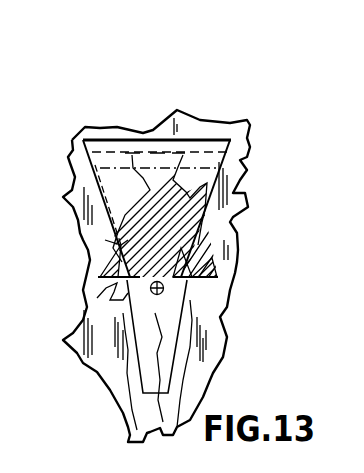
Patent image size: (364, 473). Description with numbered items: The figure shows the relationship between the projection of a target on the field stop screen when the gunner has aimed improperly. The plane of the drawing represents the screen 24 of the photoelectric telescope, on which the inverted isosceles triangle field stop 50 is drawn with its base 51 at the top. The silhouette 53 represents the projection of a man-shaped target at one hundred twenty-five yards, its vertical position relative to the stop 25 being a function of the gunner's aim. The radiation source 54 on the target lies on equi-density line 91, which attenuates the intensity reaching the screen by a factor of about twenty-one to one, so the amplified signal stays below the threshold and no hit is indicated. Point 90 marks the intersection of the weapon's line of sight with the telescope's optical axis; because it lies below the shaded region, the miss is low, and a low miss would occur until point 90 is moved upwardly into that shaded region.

The screen 24 is at (207, 124).
The stop 25 is at (231, 142).
The base 51 is at (110, 172).
The source 54 is at (158, 152).
The equi-density line 91 is at (97, 160).
The field stop 50 is at (120, 243).
The silhouette 53 is at (194, 298).
The point 90 is at (156, 295).